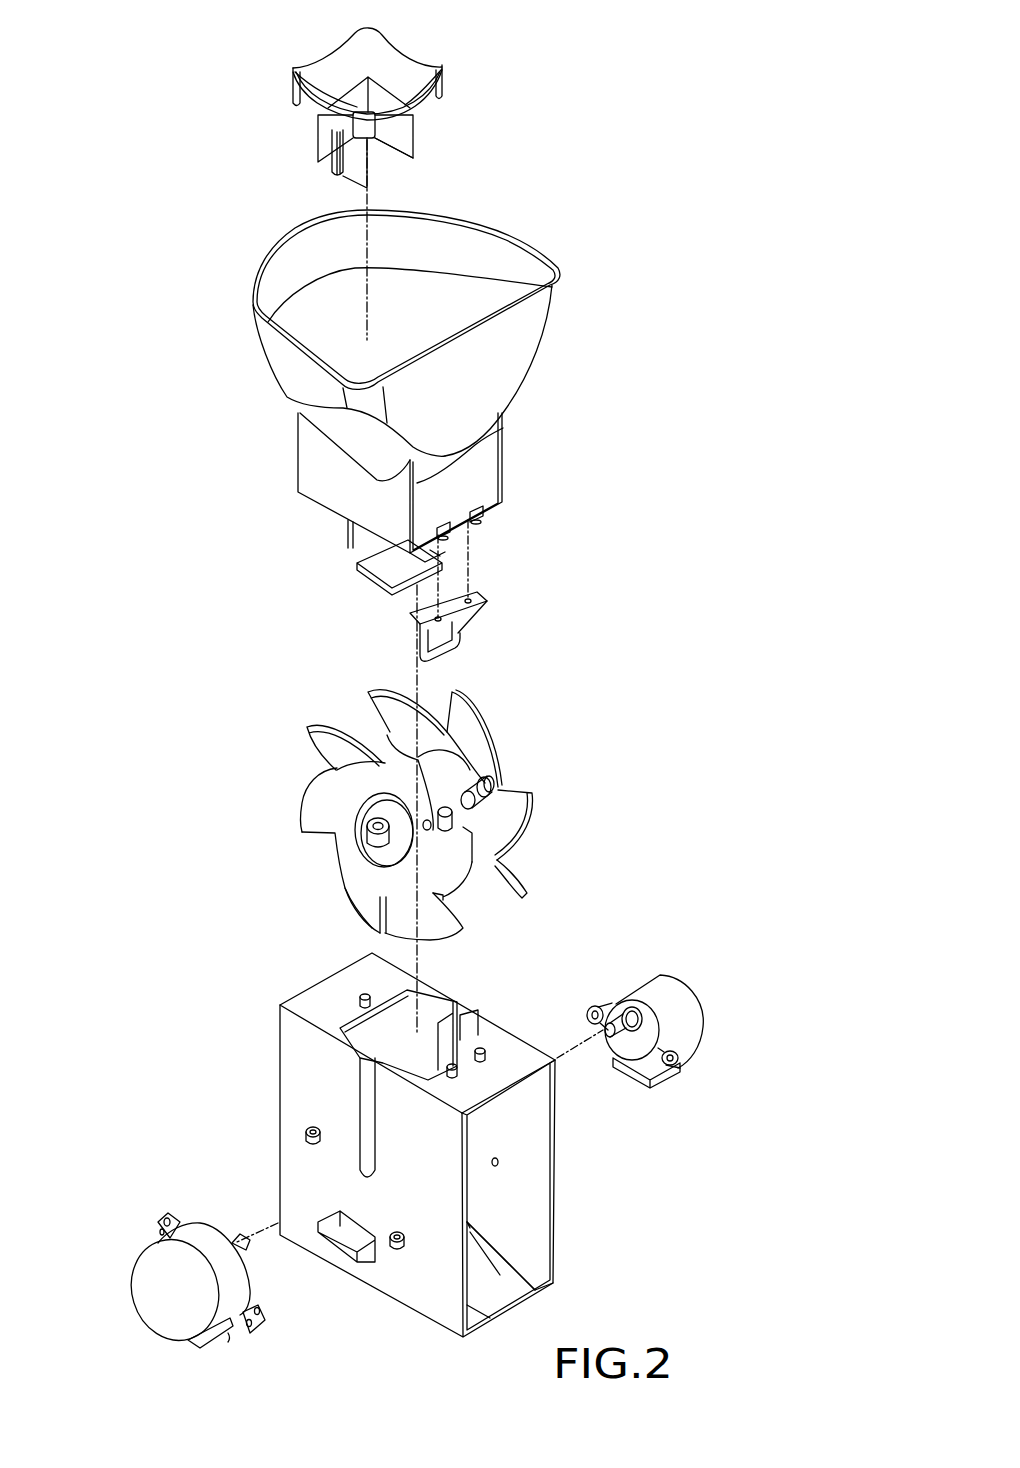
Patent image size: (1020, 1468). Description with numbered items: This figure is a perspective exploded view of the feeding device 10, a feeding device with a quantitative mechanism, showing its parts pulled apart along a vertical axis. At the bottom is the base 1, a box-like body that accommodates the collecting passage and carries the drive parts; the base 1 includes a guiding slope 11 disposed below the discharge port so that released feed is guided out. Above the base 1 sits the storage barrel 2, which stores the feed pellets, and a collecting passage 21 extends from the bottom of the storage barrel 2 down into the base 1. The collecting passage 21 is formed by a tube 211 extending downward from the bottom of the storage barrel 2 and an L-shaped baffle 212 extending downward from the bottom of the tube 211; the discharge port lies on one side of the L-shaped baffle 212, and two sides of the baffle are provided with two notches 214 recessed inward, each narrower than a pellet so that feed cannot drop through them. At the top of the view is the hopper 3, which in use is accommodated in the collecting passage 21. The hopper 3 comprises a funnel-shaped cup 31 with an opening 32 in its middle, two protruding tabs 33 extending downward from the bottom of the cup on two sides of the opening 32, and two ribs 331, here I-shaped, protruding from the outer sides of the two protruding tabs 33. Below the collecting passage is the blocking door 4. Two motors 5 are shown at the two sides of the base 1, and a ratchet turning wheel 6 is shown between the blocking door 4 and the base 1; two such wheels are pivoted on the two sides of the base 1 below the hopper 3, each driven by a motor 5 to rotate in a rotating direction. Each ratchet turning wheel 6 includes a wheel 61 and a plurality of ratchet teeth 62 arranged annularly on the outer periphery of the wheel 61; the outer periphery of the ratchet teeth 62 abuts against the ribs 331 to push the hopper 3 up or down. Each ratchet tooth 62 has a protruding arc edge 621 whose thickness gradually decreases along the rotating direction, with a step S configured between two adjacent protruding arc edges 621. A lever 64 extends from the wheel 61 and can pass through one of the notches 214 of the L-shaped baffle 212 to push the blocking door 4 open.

The feeding device 10 is at (636, 48).
The base 1 is at (453, 1145).
The guiding slope 11 is at (500, 1275).
The storage barrel 2 is at (463, 407).
The collecting passage 21 is at (502, 498).
The tube 211 is at (468, 482).
The L-shaped baffle 212 is at (418, 558).
The notch 214 is at (350, 550).
The hopper 3 is at (401, 111).
The funnel-shaped cup 31 is at (410, 77).
The opening 32 is at (355, 105).
The protruding tab 33 is at (407, 135).
The rib 331 is at (336, 145).
The blocking door 4 is at (460, 630).
The motor 5 is at (693, 1016).
The ratchet turning wheel 6 is at (390, 824).
The wheel 61 is at (343, 833).
The ratchet teeth 62 is at (365, 825).
The protruding arc edge 621 is at (352, 905).
The lever 64 is at (452, 815).
The step S is at (385, 917).